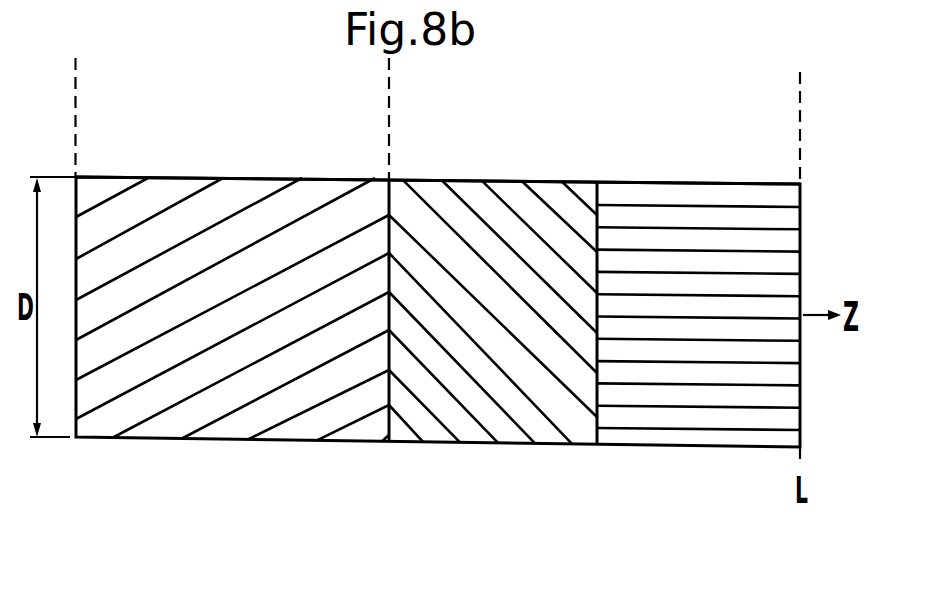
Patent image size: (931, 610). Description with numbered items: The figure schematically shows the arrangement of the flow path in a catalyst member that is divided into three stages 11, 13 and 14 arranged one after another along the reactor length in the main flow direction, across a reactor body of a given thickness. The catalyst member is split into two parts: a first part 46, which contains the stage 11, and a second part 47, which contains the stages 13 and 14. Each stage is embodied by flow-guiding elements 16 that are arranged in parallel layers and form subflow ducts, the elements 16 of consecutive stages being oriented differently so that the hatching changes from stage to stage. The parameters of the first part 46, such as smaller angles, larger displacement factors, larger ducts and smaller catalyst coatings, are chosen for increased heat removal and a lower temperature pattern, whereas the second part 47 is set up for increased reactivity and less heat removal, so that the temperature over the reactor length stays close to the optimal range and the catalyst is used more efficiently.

The stage 11 is at (220, 423).
The stage 13 is at (507, 427).
The stage 14 is at (705, 417).
The flow-guiding elements 16 is at (122, 393).
The first stage (first part of catalyst member) 46 is at (385, 171).
The second stage (second part of catalyst member) 47 is at (798, 175).